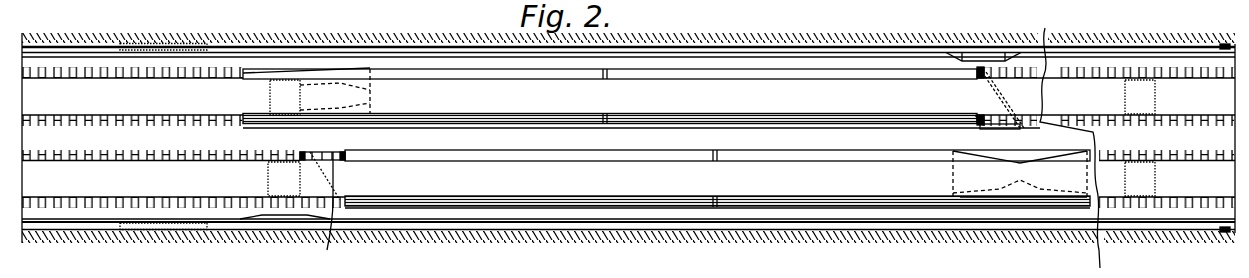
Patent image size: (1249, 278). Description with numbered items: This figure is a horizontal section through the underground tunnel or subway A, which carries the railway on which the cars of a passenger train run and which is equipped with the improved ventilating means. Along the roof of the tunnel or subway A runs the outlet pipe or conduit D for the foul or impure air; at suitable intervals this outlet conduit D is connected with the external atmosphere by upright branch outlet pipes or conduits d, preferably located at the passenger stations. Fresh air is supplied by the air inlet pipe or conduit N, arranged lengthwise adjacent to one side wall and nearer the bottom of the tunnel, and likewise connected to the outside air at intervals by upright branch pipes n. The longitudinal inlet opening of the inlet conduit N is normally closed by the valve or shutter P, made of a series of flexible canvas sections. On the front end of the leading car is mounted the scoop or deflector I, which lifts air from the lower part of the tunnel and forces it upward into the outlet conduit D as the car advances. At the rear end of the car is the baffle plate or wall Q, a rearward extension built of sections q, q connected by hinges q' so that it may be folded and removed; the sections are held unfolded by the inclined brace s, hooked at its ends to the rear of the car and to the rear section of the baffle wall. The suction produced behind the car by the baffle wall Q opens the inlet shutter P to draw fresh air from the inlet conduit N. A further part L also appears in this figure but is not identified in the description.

The air inlet pipe or conduit N is at (346, 50).
The upright branch pipes n is at (165, 43).
The valve or shutter P is at (806, 50).
The upper bar L is at (247, 70).
The horizontal tunnel or subway A is at (641, 132).
The outlet pipe or conduit D is at (717, 179).
The upright branch outlet pipes or conduits d is at (711, 138).
The sections of the baffle wall q is at (543, 192).
The hinges q' is at (657, 143).
The baffle plate or wall Q is at (992, 127).
The inclined brace s is at (981, 76).
The scoop or deflector I is at (1082, 206).